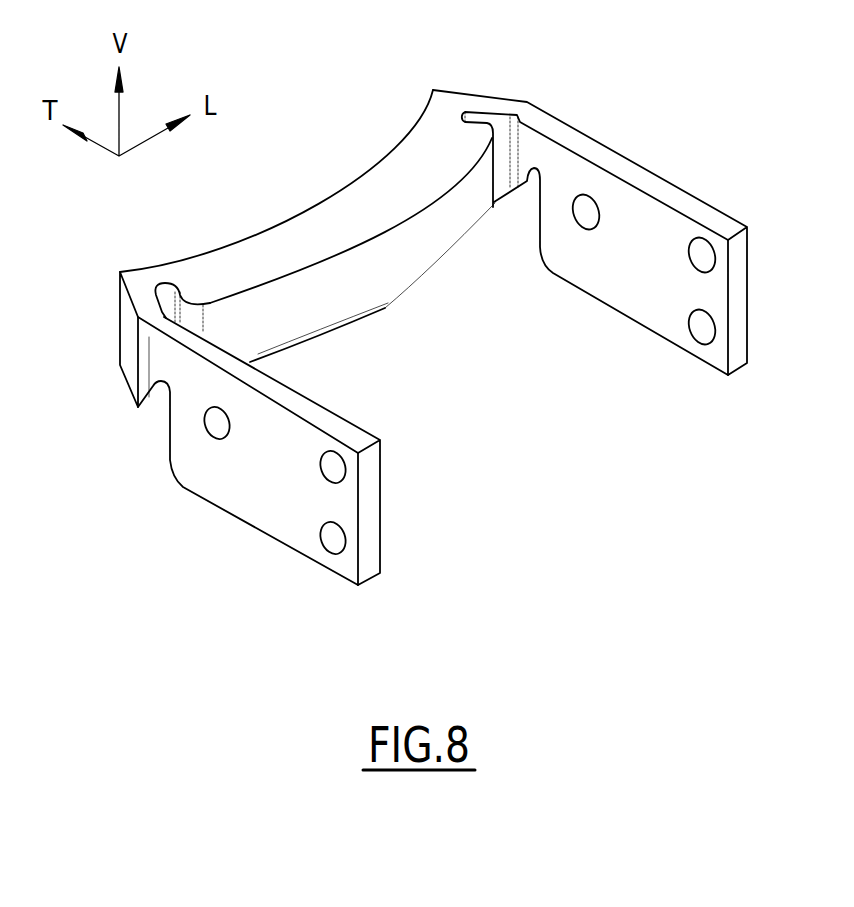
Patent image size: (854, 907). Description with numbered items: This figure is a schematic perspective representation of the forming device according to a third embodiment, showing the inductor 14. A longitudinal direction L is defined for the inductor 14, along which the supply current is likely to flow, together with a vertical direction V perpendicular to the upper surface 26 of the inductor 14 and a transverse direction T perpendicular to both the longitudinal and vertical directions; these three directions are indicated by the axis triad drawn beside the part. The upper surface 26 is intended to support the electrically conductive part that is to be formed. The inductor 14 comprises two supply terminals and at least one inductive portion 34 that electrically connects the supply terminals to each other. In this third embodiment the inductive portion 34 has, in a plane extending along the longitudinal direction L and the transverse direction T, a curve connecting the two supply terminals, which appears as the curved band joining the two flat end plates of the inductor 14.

The inductor 14 is at (434, 315).
The upper surface 26 is at (319, 241).
The inductive portion 34 is at (290, 245).